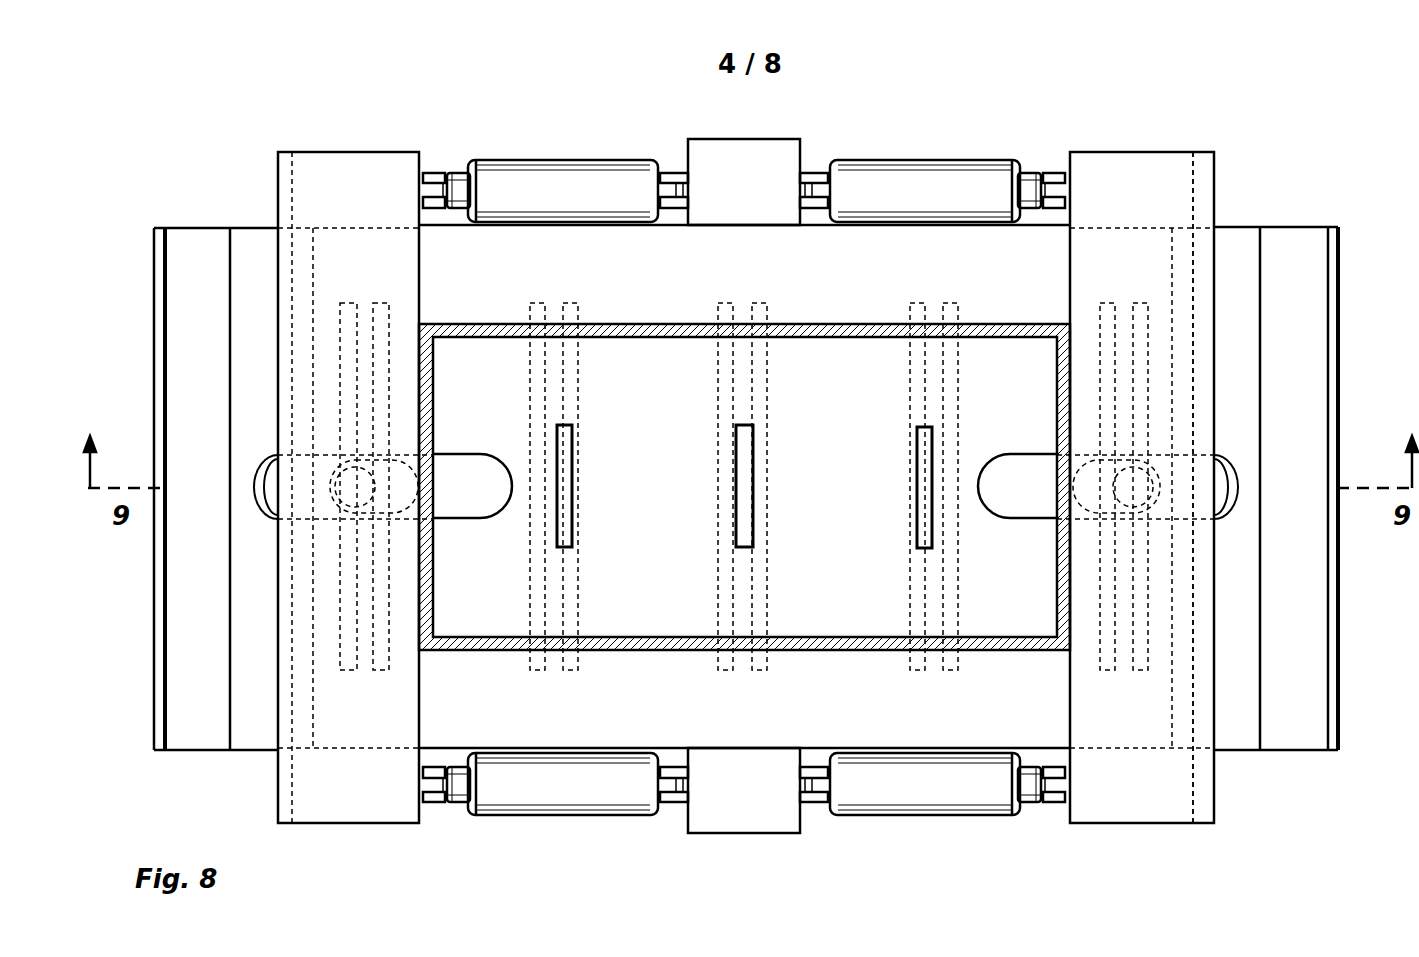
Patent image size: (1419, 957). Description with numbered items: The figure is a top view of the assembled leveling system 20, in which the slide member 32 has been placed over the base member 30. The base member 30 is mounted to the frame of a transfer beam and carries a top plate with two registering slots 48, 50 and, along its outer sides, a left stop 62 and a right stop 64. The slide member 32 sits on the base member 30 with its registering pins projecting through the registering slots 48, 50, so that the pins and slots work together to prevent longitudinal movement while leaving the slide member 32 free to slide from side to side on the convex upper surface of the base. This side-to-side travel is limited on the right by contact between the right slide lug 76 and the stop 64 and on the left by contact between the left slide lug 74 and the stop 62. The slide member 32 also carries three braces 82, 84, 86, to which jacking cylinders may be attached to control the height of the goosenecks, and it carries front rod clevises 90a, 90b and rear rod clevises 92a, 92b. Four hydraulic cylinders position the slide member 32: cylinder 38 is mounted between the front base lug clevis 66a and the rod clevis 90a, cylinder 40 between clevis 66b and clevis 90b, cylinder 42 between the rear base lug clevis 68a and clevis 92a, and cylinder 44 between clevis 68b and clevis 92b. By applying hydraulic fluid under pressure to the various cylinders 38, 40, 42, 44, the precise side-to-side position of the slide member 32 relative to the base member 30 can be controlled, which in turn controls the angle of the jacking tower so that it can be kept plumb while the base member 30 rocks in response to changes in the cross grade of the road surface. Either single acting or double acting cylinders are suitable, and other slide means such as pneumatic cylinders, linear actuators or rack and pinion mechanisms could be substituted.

The leveling system 20 is at (200, 210).
The base member 30 is at (1297, 230).
The slide member 32 is at (1115, 168).
The hydraulic cylinder 38 is at (578, 805).
The hydraulic cylinder 40 is at (925, 805).
The hydraulic cylinder 42 is at (555, 172).
The hydraulic cylinder 44 is at (930, 170).
The registering slot 48 is at (478, 512).
The registering slot 50 is at (1026, 520).
The left stop 62 is at (160, 317).
The right stop 64 is at (1340, 272).
The cylinder clevis 66a is at (668, 805).
The cylinder clevis 66b is at (813, 805).
The cylinder clevis 68a is at (672, 170).
The cylinder clevis 68b is at (810, 170).
The left slide lug 74 is at (332, 168).
The right slide lug 76 is at (1200, 175).
The brace 82 is at (565, 447).
The brace 84 is at (742, 450).
The brace 86 is at (925, 455).
The front rod clevis 90a is at (434, 808).
The front rod clevis 90b is at (1055, 805).
The rear rod clevis 92a is at (433, 170).
The rear rod clevis 92b is at (1057, 177).